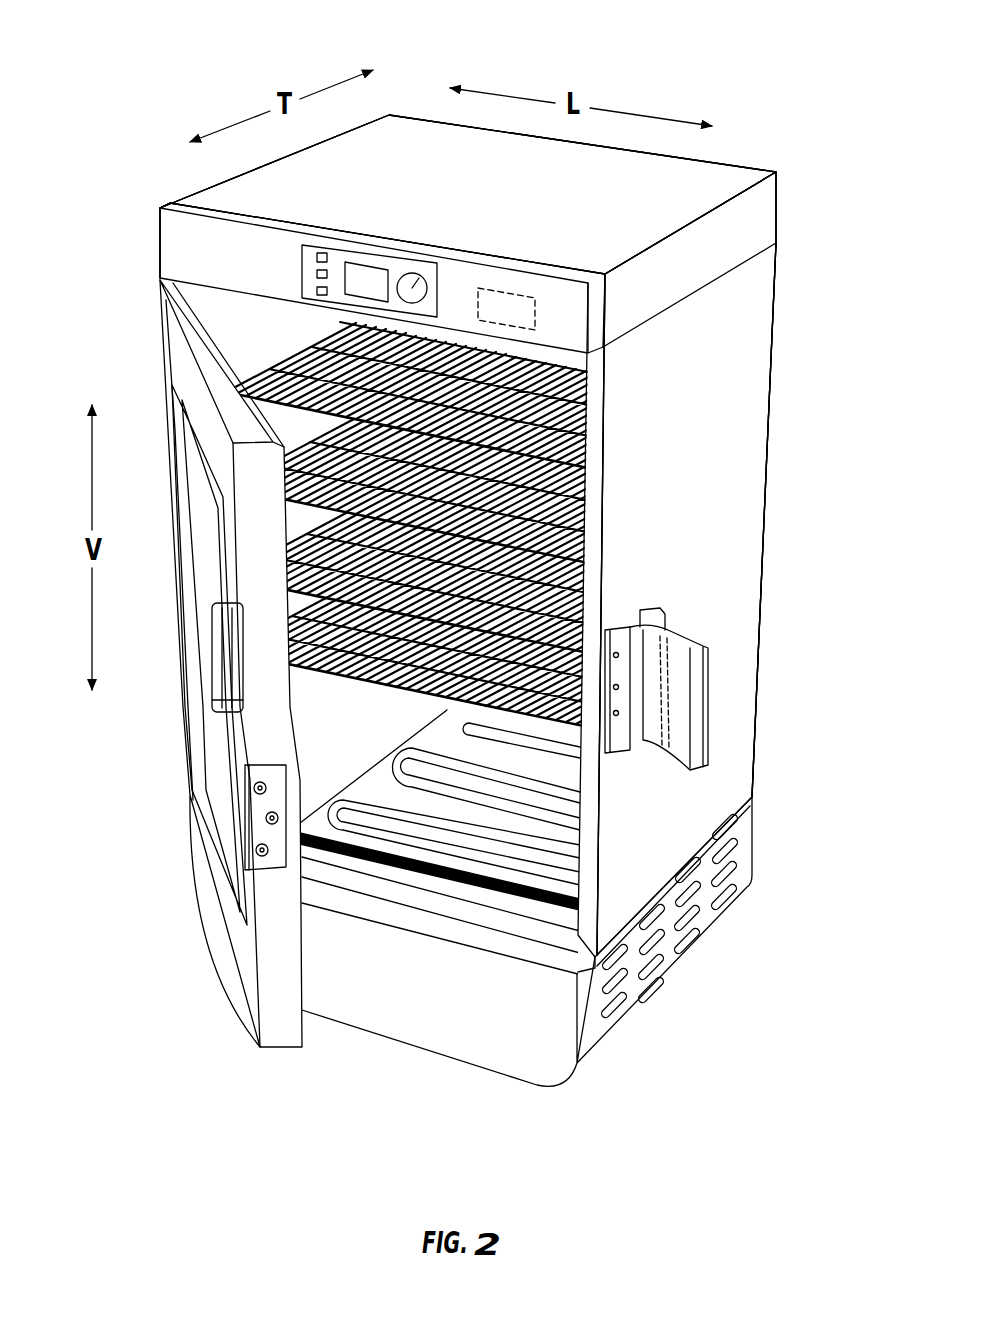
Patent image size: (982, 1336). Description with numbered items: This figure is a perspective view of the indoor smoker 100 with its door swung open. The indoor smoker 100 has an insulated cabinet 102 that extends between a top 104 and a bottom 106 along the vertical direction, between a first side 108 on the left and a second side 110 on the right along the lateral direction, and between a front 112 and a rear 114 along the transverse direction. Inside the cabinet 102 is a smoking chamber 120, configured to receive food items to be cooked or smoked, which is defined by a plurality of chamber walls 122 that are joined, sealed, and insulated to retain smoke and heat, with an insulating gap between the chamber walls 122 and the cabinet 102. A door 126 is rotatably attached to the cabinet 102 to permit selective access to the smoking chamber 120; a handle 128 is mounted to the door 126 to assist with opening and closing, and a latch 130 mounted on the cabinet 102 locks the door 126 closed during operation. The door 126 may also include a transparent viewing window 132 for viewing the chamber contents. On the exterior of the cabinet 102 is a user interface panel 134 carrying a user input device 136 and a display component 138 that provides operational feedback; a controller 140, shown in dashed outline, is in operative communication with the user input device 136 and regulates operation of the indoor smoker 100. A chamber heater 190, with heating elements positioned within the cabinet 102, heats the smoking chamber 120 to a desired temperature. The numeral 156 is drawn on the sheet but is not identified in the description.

The indoor smoker 100 is at (781, 50).
The insulated cabinet 102 is at (738, 381).
The top 104 is at (706, 168).
The bottom 106 is at (472, 1072).
The first side 108 is at (157, 253).
The second side 110 is at (755, 545).
The front 112 is at (203, 245).
The rear 114 is at (783, 279).
The smoking chamber 120 is at (362, 735).
The chamber walls 122 is at (240, 327).
The door 126 is at (200, 330).
The handle 128 is at (215, 637).
The latch 130 is at (703, 668).
The transparent viewing window 132 is at (232, 803).
The user interface panel 134 is at (389, 236).
The user input device 136 is at (322, 253).
The display component 138 is at (377, 280).
The controller 140 is at (510, 295).
The cabinet casing 156 is at (121, 110).
The chamber heater 190 is at (510, 873).